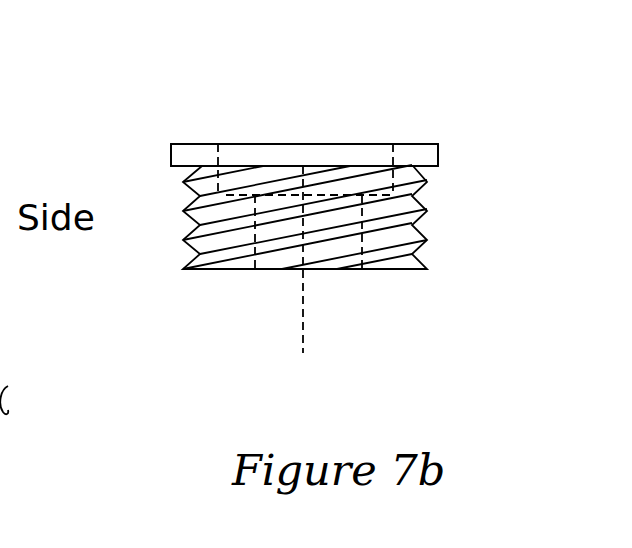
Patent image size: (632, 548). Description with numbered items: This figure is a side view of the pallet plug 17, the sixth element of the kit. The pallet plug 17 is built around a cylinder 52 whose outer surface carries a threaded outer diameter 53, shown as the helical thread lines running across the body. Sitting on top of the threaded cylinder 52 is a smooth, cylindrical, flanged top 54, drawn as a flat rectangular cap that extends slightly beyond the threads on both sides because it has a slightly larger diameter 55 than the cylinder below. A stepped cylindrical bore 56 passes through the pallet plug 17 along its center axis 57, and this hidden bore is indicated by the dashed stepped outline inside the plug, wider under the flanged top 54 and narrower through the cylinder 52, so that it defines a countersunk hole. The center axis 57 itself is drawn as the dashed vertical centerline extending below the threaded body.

The pallet plug 17 is at (486, 141).
The cylinder 52 is at (380, 242).
The threaded outer diameter 53 is at (188, 240).
The flanged top 54 is at (428, 153).
The slightly larger diameter 55 is at (171, 153).
The stepped cylindrical bore 56 is at (227, 157).
The center axis 57 is at (305, 297).